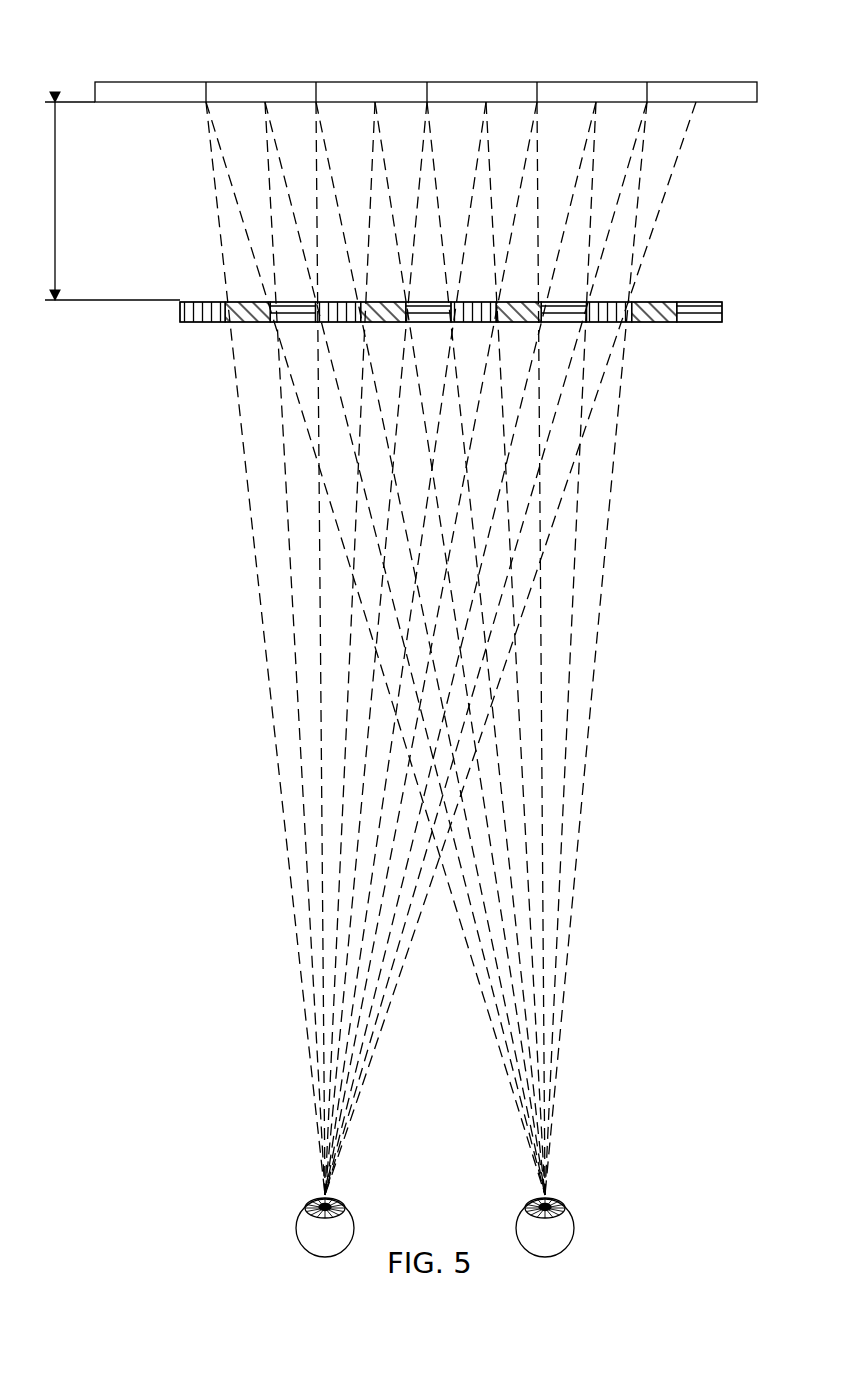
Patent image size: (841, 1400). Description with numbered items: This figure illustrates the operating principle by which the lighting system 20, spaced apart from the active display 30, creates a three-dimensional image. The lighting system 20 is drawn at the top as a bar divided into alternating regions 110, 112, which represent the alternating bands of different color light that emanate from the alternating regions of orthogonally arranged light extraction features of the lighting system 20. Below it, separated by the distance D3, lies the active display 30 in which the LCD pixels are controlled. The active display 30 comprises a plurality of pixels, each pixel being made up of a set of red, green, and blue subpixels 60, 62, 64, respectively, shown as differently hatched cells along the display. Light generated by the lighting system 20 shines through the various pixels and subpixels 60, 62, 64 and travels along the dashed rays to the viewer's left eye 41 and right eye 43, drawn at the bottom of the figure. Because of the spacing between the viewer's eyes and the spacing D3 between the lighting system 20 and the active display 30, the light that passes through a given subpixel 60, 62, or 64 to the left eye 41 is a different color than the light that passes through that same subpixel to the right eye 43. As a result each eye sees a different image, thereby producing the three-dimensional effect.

The lighting system 20 is at (95, 61).
The left-eye pixel 110 is at (146, 81).
The right-eye pixel 112 is at (256, 81).
The active display 30 is at (194, 327).
The red subpixel 60 is at (200, 302).
The green subpixel 62 is at (662, 302).
The blue subpixel 64 is at (707, 302).
The left eye 41 is at (296, 1226).
The right eye 43 is at (575, 1227).
The distance D3 is at (103, 201).